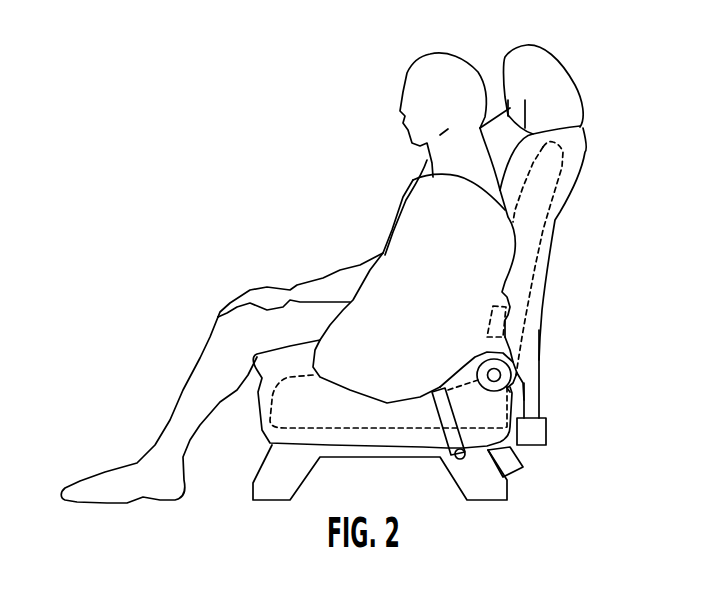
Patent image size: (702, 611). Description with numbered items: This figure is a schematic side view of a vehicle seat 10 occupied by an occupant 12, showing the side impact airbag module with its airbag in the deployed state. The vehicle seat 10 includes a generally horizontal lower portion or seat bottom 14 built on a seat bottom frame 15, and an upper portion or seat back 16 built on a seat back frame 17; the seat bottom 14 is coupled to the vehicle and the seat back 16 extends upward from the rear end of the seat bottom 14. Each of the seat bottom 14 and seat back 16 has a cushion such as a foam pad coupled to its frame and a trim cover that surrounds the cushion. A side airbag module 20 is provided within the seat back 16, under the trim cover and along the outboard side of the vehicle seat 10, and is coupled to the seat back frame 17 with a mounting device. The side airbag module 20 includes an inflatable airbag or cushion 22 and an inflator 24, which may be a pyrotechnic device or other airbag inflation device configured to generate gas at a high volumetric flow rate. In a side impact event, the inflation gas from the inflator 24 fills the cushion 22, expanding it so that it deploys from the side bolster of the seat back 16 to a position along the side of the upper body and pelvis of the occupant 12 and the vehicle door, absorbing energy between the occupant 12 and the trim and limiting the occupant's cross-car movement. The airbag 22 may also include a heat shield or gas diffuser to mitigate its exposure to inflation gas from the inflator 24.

The vehicle seat 10 is at (566, 416).
The occupant 12 is at (272, 298).
The seat bottom 14 is at (273, 373).
The seat bottom frame 15 is at (428, 418).
The seat back 16 is at (527, 353).
The seat back frame 17 is at (555, 153).
The side airbag module 20 is at (359, 74).
The inflatable airbag or cushion 22 is at (403, 214).
The inflator 24 is at (508, 317).